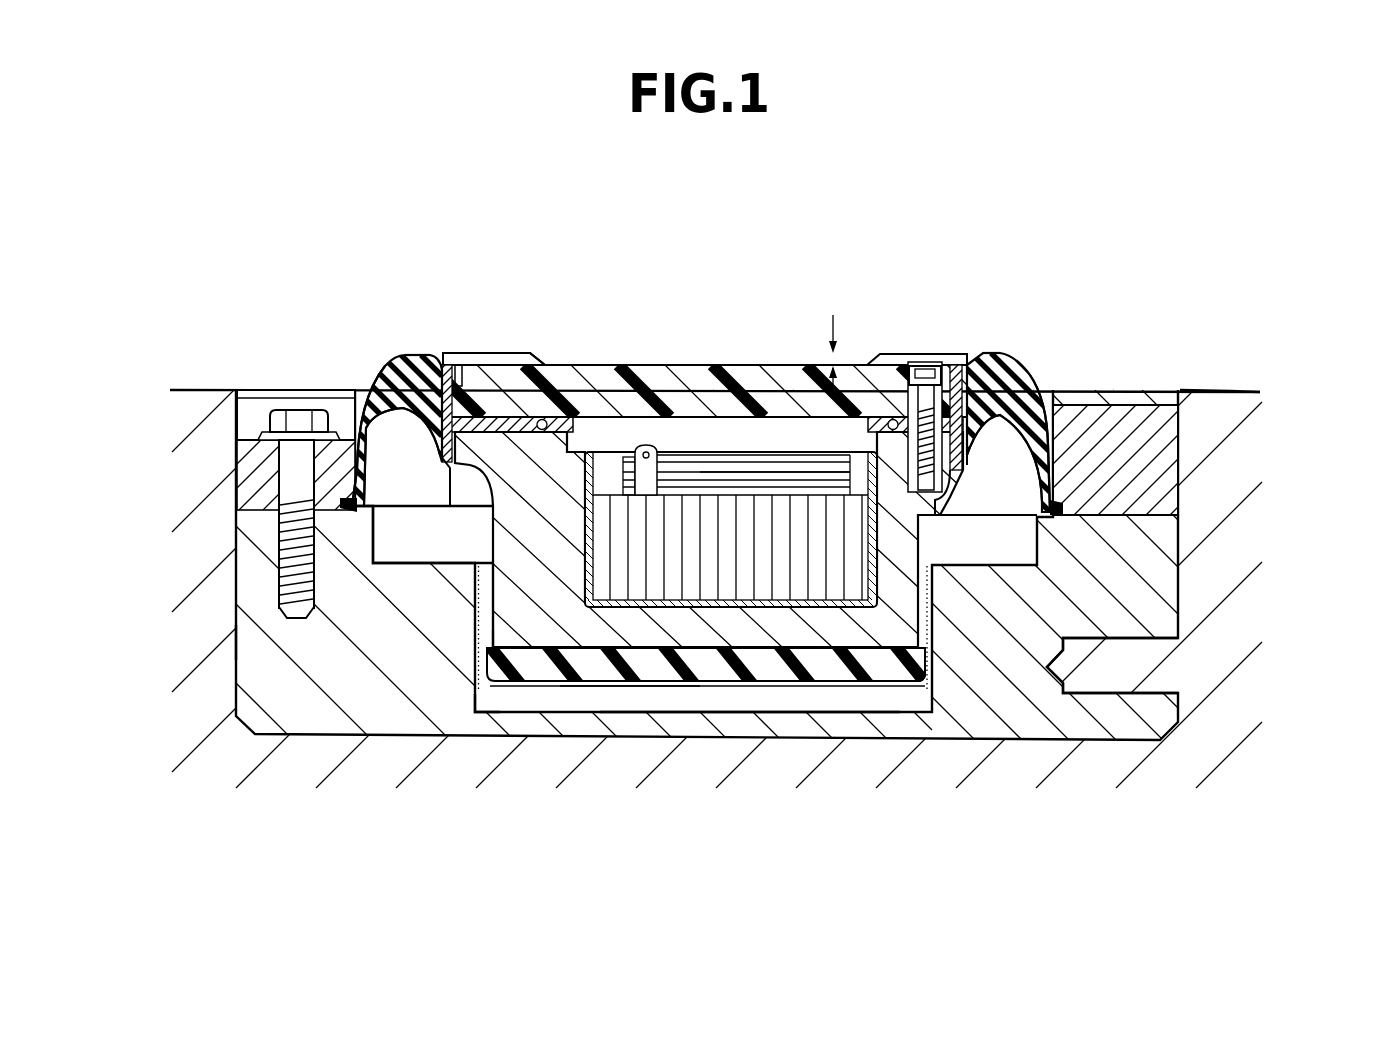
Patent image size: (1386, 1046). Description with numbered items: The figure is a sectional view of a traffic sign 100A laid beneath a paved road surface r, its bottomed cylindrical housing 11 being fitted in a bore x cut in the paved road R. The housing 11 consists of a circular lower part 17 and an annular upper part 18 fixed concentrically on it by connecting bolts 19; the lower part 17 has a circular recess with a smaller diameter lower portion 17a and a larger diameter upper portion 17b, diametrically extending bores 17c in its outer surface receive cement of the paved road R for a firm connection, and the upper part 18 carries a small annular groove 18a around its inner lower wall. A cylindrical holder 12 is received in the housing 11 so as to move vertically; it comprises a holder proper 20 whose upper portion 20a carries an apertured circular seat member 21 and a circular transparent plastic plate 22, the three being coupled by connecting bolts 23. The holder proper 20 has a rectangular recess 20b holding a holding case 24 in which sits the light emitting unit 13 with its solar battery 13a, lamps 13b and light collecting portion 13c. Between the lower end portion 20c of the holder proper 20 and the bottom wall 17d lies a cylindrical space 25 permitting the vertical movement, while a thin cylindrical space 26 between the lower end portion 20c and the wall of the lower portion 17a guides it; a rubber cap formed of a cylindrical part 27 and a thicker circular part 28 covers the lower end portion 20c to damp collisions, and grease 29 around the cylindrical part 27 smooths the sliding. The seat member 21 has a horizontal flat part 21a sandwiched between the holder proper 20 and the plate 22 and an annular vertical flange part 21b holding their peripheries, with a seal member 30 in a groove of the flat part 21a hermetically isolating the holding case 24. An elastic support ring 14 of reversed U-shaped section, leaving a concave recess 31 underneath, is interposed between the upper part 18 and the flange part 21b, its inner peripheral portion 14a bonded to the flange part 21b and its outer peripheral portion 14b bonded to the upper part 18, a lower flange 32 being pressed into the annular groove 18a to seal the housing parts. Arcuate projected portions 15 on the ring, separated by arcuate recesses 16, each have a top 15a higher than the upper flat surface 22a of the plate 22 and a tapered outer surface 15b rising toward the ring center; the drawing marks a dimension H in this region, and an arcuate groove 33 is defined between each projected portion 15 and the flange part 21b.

The traffic sign 100A is at (1034, 165).
The bottomed cylindrical housing 11 is at (1196, 548).
The cylindrical holder 12 is at (932, 540).
The light emitting unit 13 is at (779, 442).
The solar battery 13a is at (788, 585).
The lamps 13b is at (643, 444).
The light collecting portion 13c is at (748, 456).
The elastic support ring 14 is at (1015, 425).
The inner peripheral portion 14a is at (390, 438).
The outer peripheral portion 14b is at (280, 484).
The arcuate projected portions 15 is at (395, 358).
The top 15a is at (510, 400).
The tapered outer surface 15b is at (372, 405).
The arcuate recesses 16 is at (668, 390).
The circular lower part 17 is at (1050, 725).
The smaller diameter lower portion 17a is at (475, 714).
The larger diameter upper portion 17b is at (375, 530).
The diametrically extending bores 17c is at (1122, 690).
The bottom wall 17d is at (673, 710).
The annular upper part 18 is at (262, 462).
The small annular groove 18a is at (290, 553).
The connecting bolts 19 is at (300, 408).
The holder proper 20 is at (847, 630).
The upper portion 20a is at (528, 418).
The rectangular recess 20b is at (585, 620).
The lower end portion 20c is at (505, 648).
The apertured circular seat member 21 is at (543, 393).
The horizontal flat part 21a is at (473, 400).
The annular vertical flange part 21b is at (447, 385).
The circular transparent plastic plate 22 is at (697, 400).
The upper flat surface 22a is at (720, 400).
The connecting bolts 23 is at (912, 375).
The holding case 24 is at (723, 667).
The cylindrical space 25 is at (640, 697).
The thin cylindrical space 26 is at (922, 700).
The cylindrical part 27 is at (920, 617).
The thicker circular part 28 is at (820, 678).
The grease 29 is at (478, 612).
The seal member 30 is at (520, 455).
The concave recess 31 is at (350, 396).
The lower flange 32 is at (1062, 503).
The arcuate groove 33 is at (420, 385).
The bore x is at (236, 642).
The paved road surface r is at (1208, 395).
The paved road R is at (1222, 420).
The height H is at (834, 342).